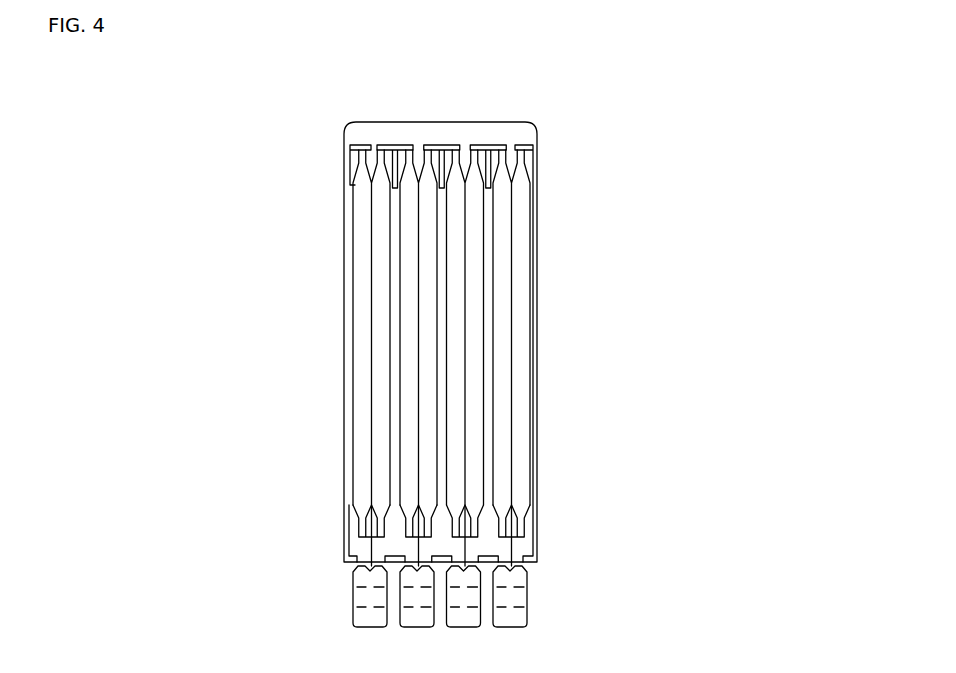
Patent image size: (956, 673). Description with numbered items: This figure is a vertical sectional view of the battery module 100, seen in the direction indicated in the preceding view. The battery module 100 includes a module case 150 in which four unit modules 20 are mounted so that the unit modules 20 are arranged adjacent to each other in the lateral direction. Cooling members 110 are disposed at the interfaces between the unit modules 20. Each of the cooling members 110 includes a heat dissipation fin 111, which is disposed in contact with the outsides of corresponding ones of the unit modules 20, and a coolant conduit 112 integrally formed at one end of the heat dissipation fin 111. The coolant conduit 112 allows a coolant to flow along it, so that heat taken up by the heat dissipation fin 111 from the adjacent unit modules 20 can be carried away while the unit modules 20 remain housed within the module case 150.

The battery module 100 is at (116, 131).
The module case 150 is at (497, 133).
The unit module 20 is at (518, 397).
The heat dissipation fin 111 is at (372, 417).
The cooling member 110 is at (302, 520).
The coolant conduit 112 is at (370, 589).